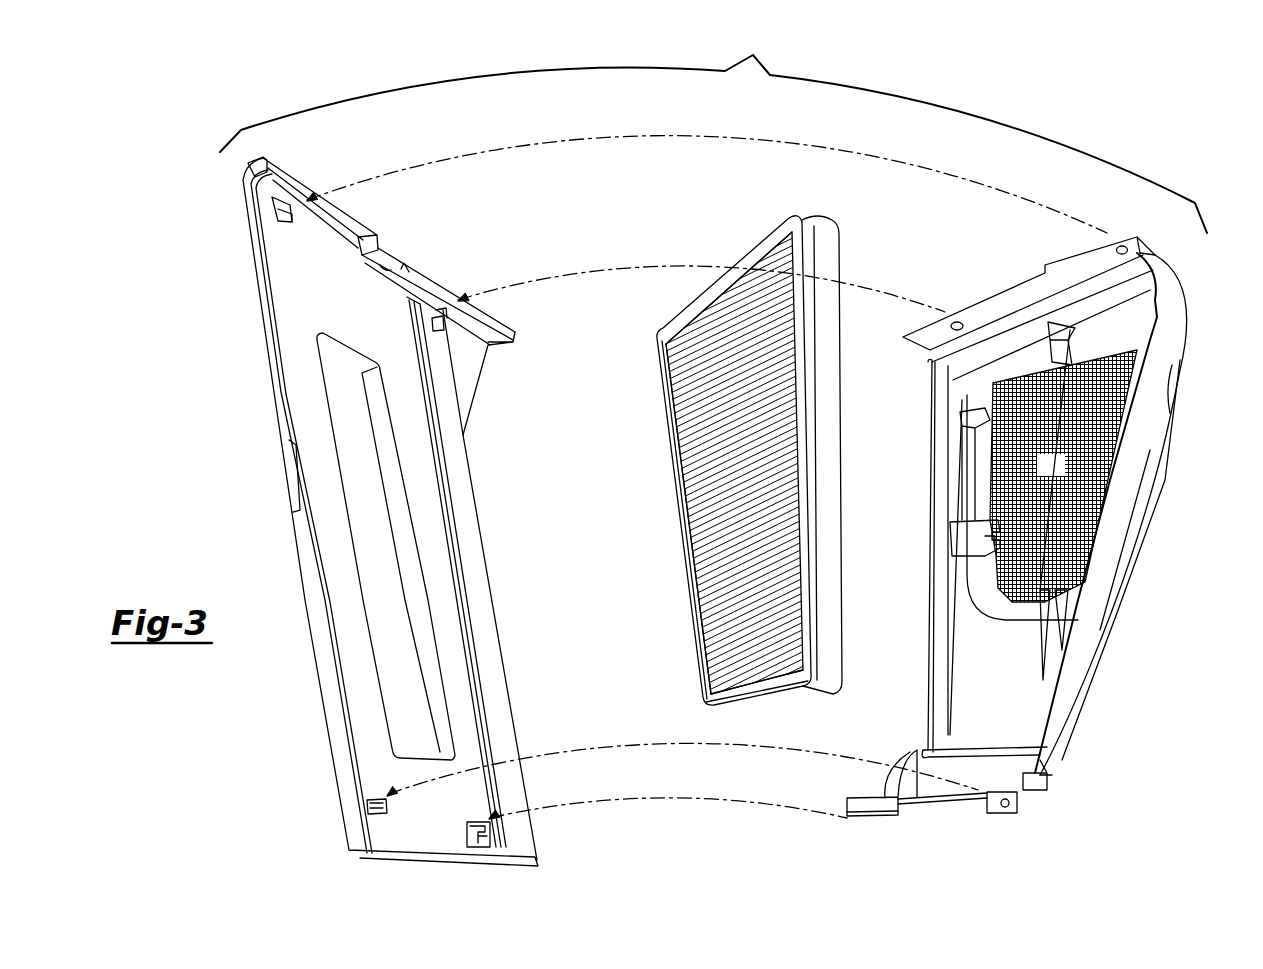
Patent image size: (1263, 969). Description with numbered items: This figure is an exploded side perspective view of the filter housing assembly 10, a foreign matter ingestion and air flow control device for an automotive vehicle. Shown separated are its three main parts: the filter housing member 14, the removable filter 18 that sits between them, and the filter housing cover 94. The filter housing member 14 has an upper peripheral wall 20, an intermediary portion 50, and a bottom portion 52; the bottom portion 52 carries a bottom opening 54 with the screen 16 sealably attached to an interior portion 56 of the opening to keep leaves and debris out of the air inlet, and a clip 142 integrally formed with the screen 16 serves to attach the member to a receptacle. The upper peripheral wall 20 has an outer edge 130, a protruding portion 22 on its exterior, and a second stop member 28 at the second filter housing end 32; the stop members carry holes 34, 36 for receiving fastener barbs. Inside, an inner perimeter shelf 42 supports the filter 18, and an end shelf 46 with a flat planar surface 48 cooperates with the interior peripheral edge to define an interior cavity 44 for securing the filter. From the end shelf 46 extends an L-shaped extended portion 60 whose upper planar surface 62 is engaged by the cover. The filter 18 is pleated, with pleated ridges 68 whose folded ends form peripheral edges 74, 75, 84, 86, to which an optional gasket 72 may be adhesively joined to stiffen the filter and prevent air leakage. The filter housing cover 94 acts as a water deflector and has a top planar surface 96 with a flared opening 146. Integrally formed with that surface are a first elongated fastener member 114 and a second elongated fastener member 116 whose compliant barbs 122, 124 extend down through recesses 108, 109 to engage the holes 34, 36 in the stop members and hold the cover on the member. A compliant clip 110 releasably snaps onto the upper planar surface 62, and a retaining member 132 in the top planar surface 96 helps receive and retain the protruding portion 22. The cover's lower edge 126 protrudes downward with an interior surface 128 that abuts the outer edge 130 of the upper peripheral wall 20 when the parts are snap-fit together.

The filter housing assembly 10 is at (713, 130).
The filter housing member 14 is at (1192, 328).
The screen 16 is at (1123, 444).
The filter 18 is at (675, 477).
The upper peripheral wall 20 is at (1093, 563).
The protruding portion 22 is at (958, 321).
The second stop member 28 is at (1003, 814).
The second filter housing end 32 is at (937, 801).
The hole 34 is at (1122, 245).
The hole 36 is at (1009, 810).
The inner perimeter shelf 42 is at (943, 582).
The interior cavity 44 is at (1015, 684).
The end shelf 46 is at (1042, 786).
The flat planar surface 48 is at (993, 738).
The intermediary portion 50 is at (1139, 530).
The bottom portion 52 is at (977, 473).
The bottom opening 54 is at (1063, 476).
The interior portion 56 is at (958, 410).
The L-shaped extended portion 60 is at (847, 808).
The upper planar surface 62 is at (887, 816).
The pleated ridges 68 is at (710, 627).
The gasket 72 is at (800, 701).
The peripheral edge 74 is at (747, 693).
The peripheral edge 75 is at (727, 288).
The peripheral edge 84 is at (690, 582).
The peripheral edge 86 is at (802, 470).
The filter housing cover 94 is at (255, 335).
The top planar surface 96 is at (266, 294).
The recess 108 is at (275, 205).
The recess 109 is at (381, 808).
The compliant clip 110 is at (495, 845).
The first elongated fastener member 114 is at (283, 225).
The second elongated fastener member 116 is at (367, 804).
The first compliant barb 122 is at (306, 198).
The second compliant barb 124 is at (393, 793).
The lower edge 126 is at (364, 226).
The interior surface 128 is at (399, 262).
The outer edge 130 is at (1013, 297).
The retaining member 132 is at (444, 308).
The clip 142 is at (950, 538).
The flared opening 146 is at (378, 506).